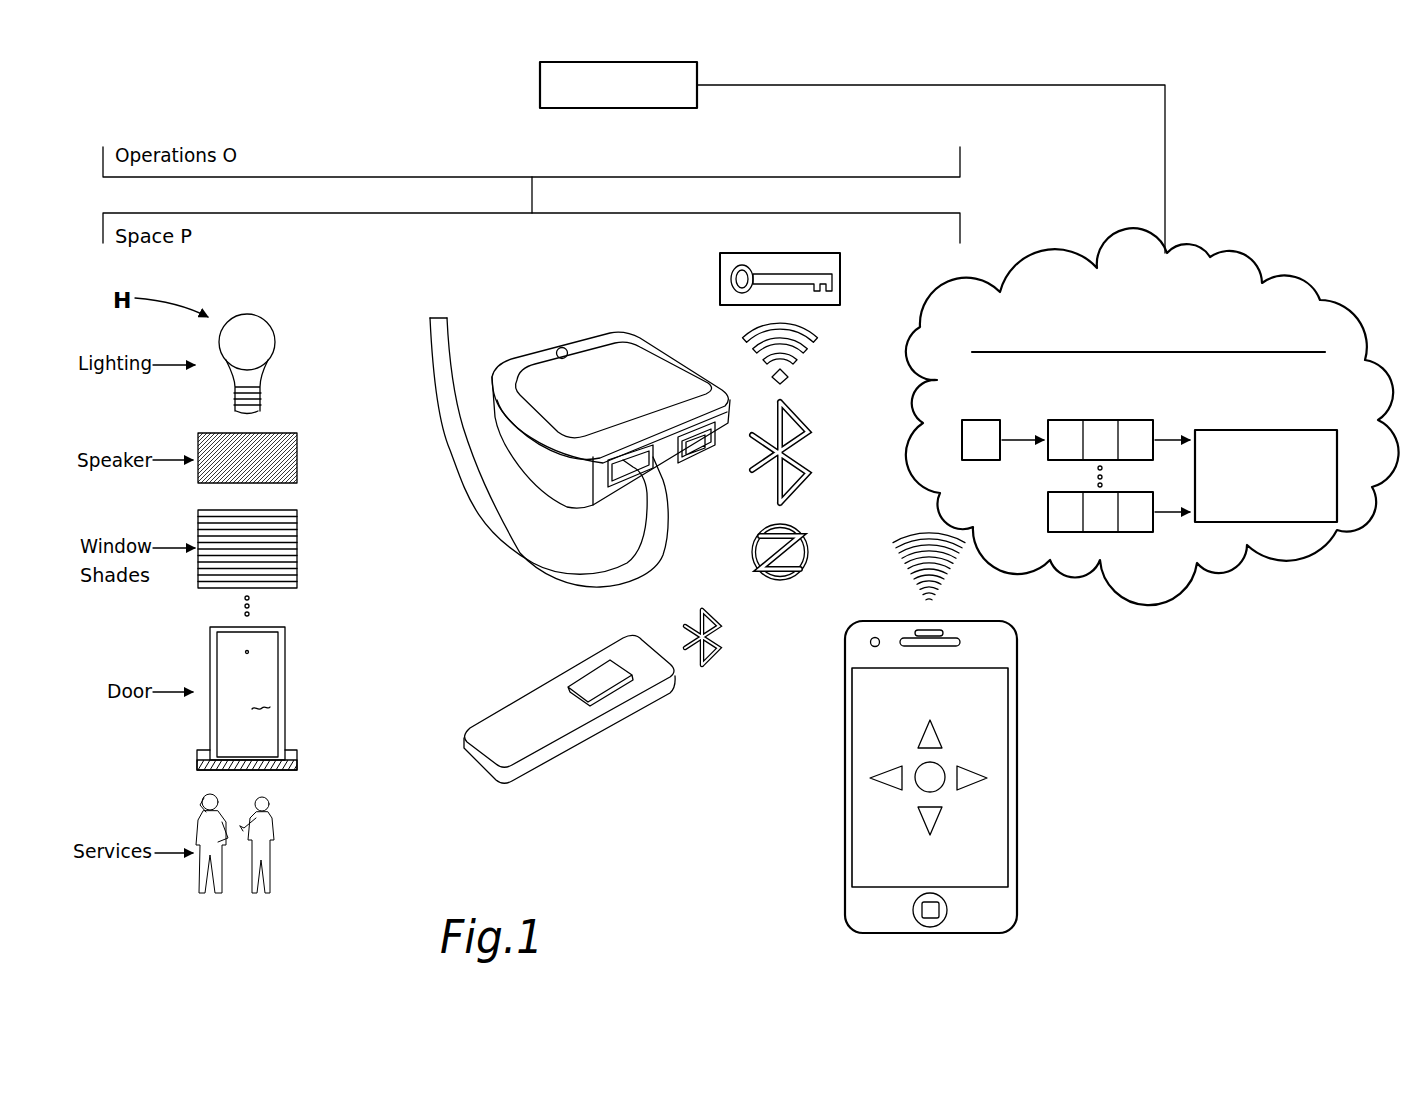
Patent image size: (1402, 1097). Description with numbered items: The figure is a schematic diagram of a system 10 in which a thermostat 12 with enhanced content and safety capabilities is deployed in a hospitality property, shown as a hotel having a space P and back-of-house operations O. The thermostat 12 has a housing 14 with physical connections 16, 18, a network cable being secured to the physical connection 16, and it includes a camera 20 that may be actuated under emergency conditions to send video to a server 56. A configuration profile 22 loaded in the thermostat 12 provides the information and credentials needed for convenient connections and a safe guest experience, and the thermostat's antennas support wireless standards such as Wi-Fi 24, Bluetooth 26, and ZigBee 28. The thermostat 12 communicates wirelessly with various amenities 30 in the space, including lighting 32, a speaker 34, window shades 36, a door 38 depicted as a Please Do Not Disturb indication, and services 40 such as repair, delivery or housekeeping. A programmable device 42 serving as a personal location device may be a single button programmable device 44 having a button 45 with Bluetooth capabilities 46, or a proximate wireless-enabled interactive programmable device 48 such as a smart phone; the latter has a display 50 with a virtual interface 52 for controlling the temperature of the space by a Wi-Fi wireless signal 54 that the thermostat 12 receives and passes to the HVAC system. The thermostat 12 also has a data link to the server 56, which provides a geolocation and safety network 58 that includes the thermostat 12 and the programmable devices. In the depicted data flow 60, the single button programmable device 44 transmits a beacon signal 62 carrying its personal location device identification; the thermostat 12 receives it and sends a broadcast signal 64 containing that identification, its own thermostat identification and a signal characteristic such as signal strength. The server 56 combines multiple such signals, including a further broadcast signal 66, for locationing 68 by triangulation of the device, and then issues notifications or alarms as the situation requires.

The system 10 is at (1273, 147).
The thermostat 12 is at (542, 427).
The housing 14 is at (548, 348).
The physical connection 16 is at (628, 453).
The physical connection 18 is at (700, 463).
The camera 20 is at (565, 348).
The configuration profile 22 is at (840, 280).
The Wi-Fi 24 is at (807, 355).
The Bluetooth 26 is at (800, 450).
The ZigBee 28 is at (808, 550).
The amenities 30 is at (332, 617).
The lighting 32 is at (275, 345).
The speaker 34 is at (297, 460).
The window shades 36 is at (297, 548).
The door 38 is at (287, 692).
The services 40 is at (277, 833).
The programmable device 42 is at (732, 783).
The single button programmable device 44 is at (578, 709).
The button 45 is at (583, 680).
The Bluetooth capabilities 46 is at (720, 640).
The proximate wireless-enabled interactive programmable device 48 is at (939, 777).
The display 50 is at (930, 777).
The virtual interface 52 is at (863, 808).
The Wi-Fi wireless signal 54 is at (923, 533).
The server 56 is at (540, 83).
The geolocation and safety network 58 is at (1152, 416).
The data flow 60 is at (1143, 403).
The beacon signal 62 is at (982, 420).
The broadcast signal 64 is at (1097, 420).
The broadcast signal 66 is at (1047, 513).
The locationing 68 is at (1272, 430).